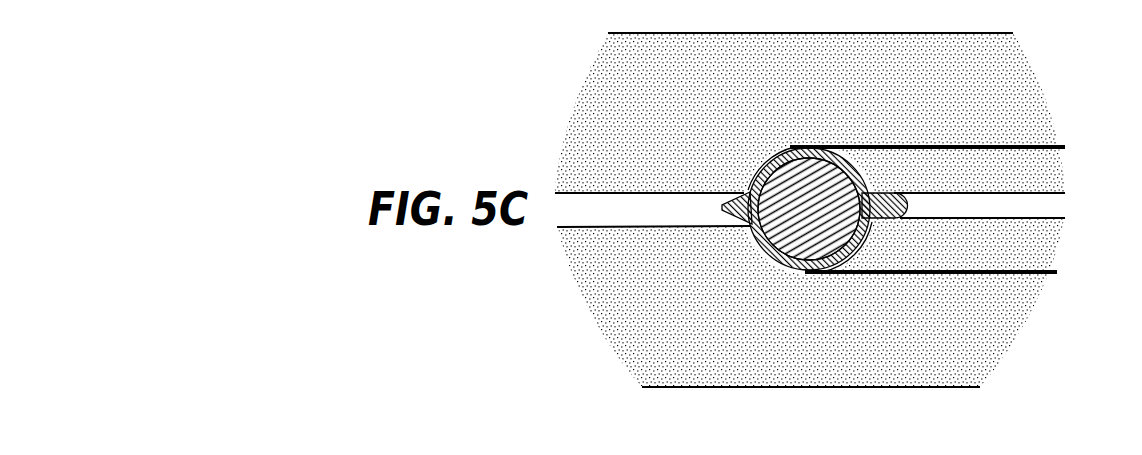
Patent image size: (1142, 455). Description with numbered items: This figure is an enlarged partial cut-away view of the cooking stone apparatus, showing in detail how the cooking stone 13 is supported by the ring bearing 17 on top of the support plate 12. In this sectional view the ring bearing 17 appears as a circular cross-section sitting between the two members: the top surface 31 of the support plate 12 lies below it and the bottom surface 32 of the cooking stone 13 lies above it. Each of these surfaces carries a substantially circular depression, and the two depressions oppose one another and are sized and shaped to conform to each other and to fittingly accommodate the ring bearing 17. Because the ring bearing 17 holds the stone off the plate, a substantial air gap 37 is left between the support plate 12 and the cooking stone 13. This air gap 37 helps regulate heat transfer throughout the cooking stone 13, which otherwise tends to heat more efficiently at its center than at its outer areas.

The support plate 12 is at (1023, 312).
The cooking stone 13 is at (1023, 80).
The ring bearing 17 is at (793, 185).
The top surface 31 is at (578, 217).
The bottom surface 32 is at (590, 200).
The air gap 37 is at (1043, 177).